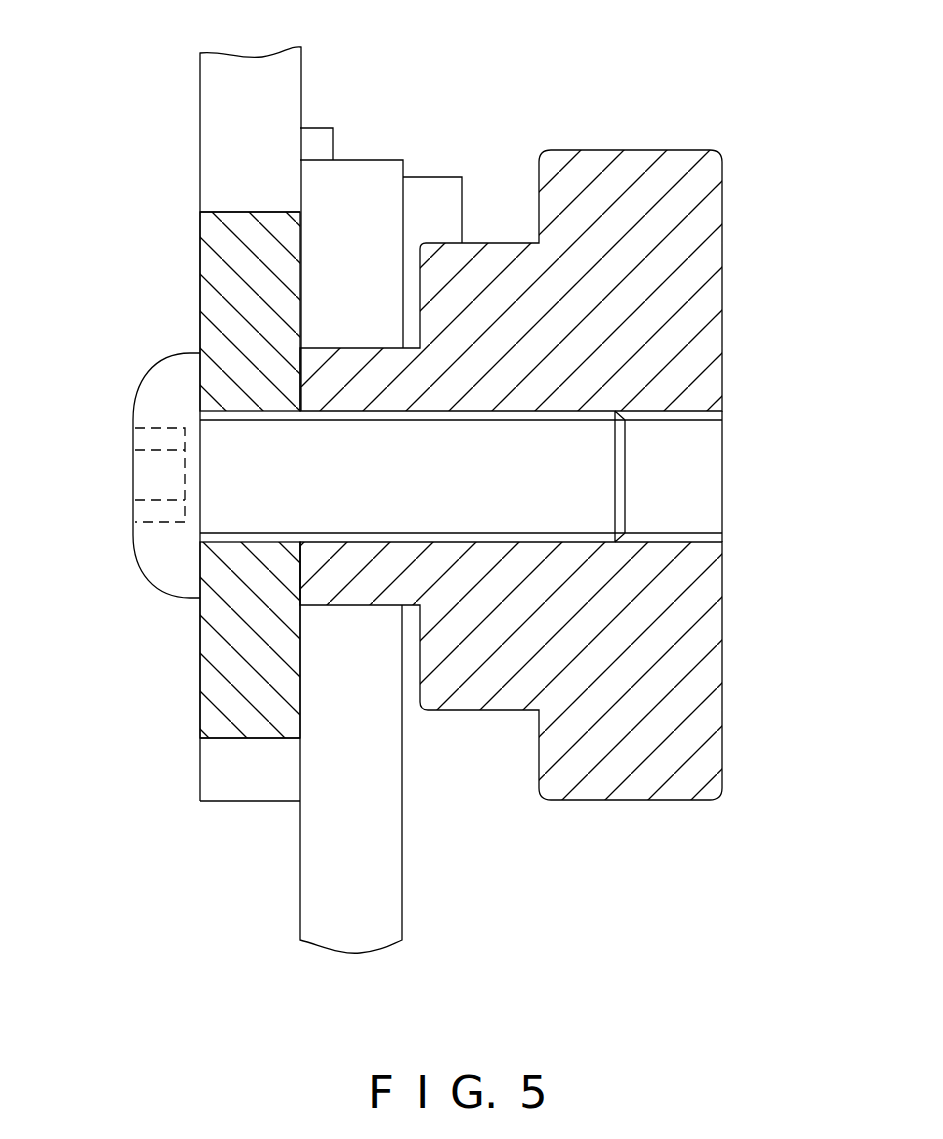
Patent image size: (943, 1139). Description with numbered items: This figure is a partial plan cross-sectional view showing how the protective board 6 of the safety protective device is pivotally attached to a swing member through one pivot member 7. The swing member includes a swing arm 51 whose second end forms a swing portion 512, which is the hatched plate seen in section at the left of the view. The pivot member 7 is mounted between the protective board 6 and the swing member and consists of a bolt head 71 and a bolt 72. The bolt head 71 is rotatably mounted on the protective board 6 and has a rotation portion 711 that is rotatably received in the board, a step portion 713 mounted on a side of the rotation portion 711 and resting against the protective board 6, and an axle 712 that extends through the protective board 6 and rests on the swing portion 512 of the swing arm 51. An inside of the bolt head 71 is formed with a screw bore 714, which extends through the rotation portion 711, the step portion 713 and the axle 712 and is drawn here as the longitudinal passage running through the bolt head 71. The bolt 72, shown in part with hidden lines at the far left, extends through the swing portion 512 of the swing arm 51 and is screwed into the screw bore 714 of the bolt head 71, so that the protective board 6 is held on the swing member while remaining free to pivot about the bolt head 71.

The swing arm 51 is at (174, 424).
The swing portion 512 is at (222, 680).
The protective board 6 is at (300, 880).
The pivot member 7 is at (532, 400).
The bolt head 71 is at (723, 292).
The rotation portion 711 is at (703, 765).
The axle 712 is at (342, 365).
The step portion 713 is at (494, 262).
The screw bore 714 is at (667, 537).
The bolt 72 is at (152, 371).